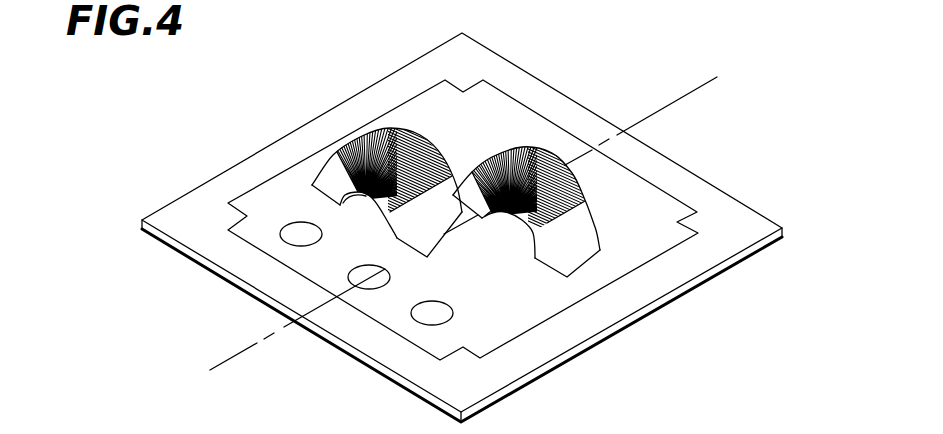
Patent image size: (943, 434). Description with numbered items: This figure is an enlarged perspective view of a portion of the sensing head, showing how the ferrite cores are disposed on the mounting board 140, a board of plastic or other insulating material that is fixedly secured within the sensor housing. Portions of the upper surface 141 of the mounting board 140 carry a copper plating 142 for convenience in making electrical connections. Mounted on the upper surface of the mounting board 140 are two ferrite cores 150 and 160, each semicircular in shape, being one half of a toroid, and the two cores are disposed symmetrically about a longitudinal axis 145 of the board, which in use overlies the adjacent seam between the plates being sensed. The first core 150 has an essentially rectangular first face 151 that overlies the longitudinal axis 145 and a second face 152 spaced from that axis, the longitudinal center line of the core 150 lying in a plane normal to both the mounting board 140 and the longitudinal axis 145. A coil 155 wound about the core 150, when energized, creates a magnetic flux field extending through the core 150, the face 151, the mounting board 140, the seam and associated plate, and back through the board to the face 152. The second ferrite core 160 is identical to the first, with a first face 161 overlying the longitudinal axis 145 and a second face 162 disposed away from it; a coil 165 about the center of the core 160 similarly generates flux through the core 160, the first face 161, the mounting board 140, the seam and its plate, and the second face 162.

The mounting board 140 is at (267, 143).
The upper surface 141 is at (472, 129).
The copper plating 142 is at (283, 239).
The longitudinal axis 145 is at (658, 108).
The ferrite core 150 is at (366, 159).
The first face 151 is at (412, 246).
The second face 152 is at (317, 193).
The coil 155 is at (370, 148).
The second ferrite core 160 is at (549, 176).
The first face 161 is at (480, 229).
The second face 162 is at (588, 269).
The coil 165 is at (533, 170).